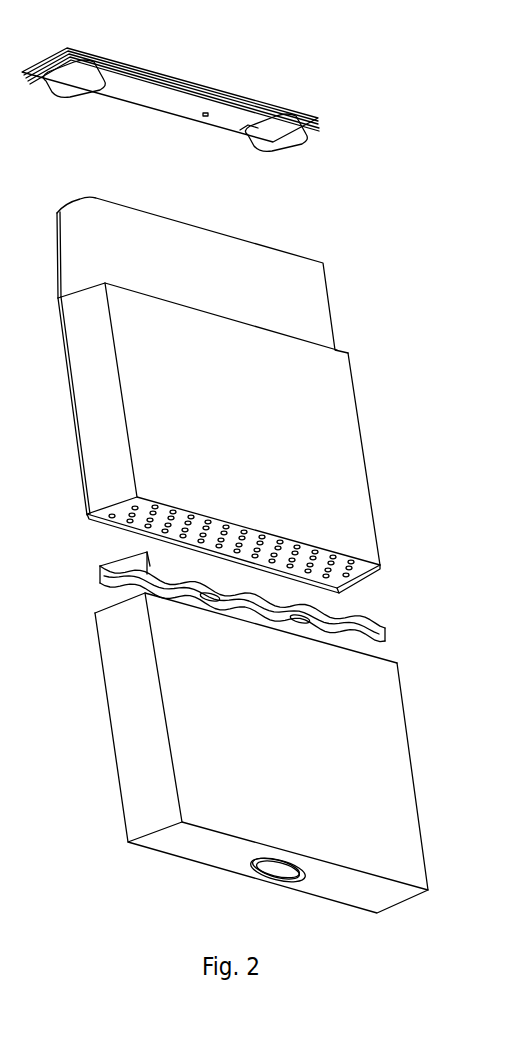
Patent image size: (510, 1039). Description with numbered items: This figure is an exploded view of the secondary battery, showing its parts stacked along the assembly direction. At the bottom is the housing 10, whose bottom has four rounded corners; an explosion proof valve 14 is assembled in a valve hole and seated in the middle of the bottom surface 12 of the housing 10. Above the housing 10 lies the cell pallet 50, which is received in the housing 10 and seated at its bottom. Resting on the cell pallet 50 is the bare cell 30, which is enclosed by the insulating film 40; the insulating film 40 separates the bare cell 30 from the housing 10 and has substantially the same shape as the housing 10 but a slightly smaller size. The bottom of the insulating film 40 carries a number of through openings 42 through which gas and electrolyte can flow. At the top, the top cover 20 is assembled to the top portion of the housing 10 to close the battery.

The housing 10 is at (128, 723).
The bottom surface 12 is at (183, 842).
The explosion proof valve 14 is at (278, 868).
The top cover 20 is at (158, 101).
The bare cell 30 is at (193, 250).
The insulating film 40 is at (340, 417).
The through openings 42 is at (137, 519).
The cell pallet 50 is at (373, 623).